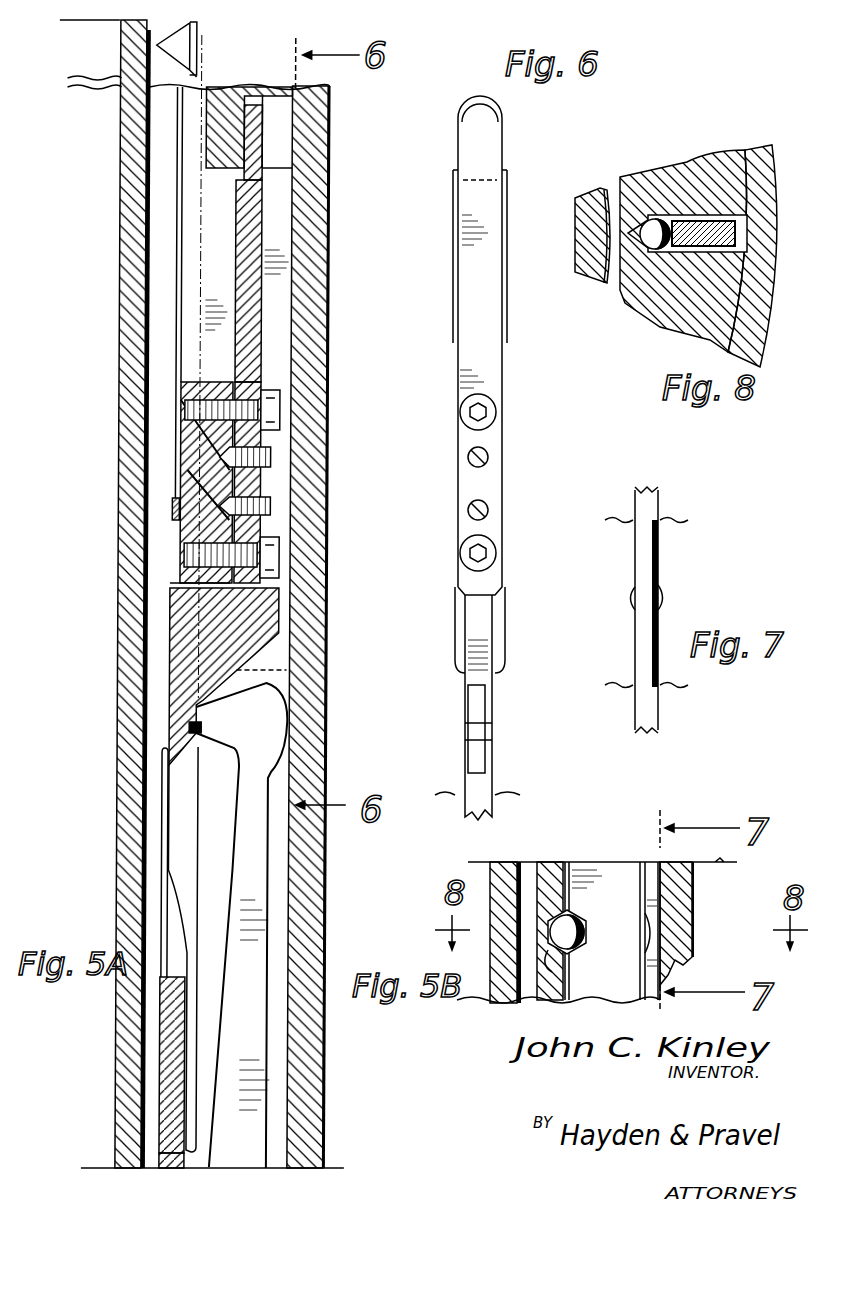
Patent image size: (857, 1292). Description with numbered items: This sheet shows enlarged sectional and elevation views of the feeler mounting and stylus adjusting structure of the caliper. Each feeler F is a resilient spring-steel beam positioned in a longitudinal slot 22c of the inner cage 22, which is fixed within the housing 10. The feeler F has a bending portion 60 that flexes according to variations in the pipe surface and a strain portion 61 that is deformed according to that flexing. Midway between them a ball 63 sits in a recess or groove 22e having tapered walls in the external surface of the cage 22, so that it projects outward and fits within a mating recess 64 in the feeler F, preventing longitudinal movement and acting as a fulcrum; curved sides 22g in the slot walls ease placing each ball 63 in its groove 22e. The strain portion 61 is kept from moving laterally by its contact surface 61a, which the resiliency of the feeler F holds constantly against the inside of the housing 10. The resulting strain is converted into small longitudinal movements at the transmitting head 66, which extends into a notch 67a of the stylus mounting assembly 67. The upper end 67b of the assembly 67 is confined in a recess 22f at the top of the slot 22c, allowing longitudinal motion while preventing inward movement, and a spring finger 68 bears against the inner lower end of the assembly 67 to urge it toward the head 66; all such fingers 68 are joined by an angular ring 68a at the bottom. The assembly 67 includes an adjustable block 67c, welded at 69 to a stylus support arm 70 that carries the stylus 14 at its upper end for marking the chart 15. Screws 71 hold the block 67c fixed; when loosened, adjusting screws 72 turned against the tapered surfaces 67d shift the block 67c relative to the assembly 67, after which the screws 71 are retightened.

In FIG. 5A, the housing 10 is at (323, 630).
In FIG. 8, the housing 10 is at (772, 150).
In FIG. 5B, the housing 10 is at (690, 868).
In FIG. 5A, the stylus 14 is at (170, 45).
In FIG. 5A, the chart 15 is at (136, 1050).
In FIG. 8, the chart 15 is at (598, 262).
In FIG. 5B, the chart 15 is at (498, 862).
In FIG. 5A, the inner cage 22 is at (173, 1157).
In FIG. 8, the inner cage 22 is at (650, 300).
In FIG. 7, the inner cage 22 is at (672, 518).
In FIG. 5B, the inner cage 22 is at (550, 862).
In FIG. 5A, the slot 22c is at (284, 320).
In FIG. 6, the slot 22c is at (465, 272).
In FIG. 8, the recess or groove 22e is at (640, 253).
In FIG. 5B, the recess or groove 22e is at (565, 970).
In FIG. 5A, the recess 22f is at (287, 112).
In FIG. 6, the recess 22f is at (500, 127).
In FIG. 7, the curved sides 22g is at (662, 590).
In FIG. 5B, the curved sides 22g is at (655, 925).
In FIG. 7, the bending portion 60 is at (640, 630).
In FIG. 5B, the bending portion 60 is at (660, 980).
In FIG. 5A, the strain portion 61 is at (266, 1070).
In FIG. 7, the strain portion 61 is at (650, 548).
In FIG. 5B, the strain portion 61 is at (619, 860).
In FIG. 5A, the contact surface 61a is at (292, 727).
In FIG. 6, the contact surface 61a is at (480, 705).
In FIG. 8, the ball 63 is at (642, 220).
In FIG. 5B, the ball 63 is at (575, 925).
In FIG. 8, the mating recess 64 is at (673, 222).
In FIG. 5B, the mating recess 64 is at (590, 932).
In FIG. 5A, the transmitting head 66 is at (201, 722).
In FIG. 5A, the stylus mounting assembly 67 is at (278, 600).
In FIG. 6, the stylus mounting assembly 67 is at (490, 358).
In FIG. 5A, the notch 67a is at (197, 727).
In FIG. 6, the notch 67a is at (485, 730).
In FIG. 5A, the upper end 67b is at (260, 135).
In FIG. 5A, the adjustable block 67c is at (191, 530).
In FIG. 5A, the tapered surfaces 67d is at (212, 440).
In FIG. 5A, the spring finger 68 is at (174, 773).
In FIG. 5A, the angular ring 68a is at (178, 1020).
In FIG. 5A, the weld 69 is at (178, 505).
In FIG. 5A, the stylus support arm 70 is at (179, 278).
In FIG. 5A, the screws 71 is at (218, 382).
In FIG. 6, the screws 71 is at (496, 412).
In FIG. 5A, the adjusting screws 72 is at (270, 450).
In FIG. 6, the adjusting screws 72 is at (489, 457).
In FIG. 5A, the feeler F is at (282, 873).
In FIG. 8, the feeler F is at (701, 214).
In FIG. 7, the feeler F is at (660, 496).